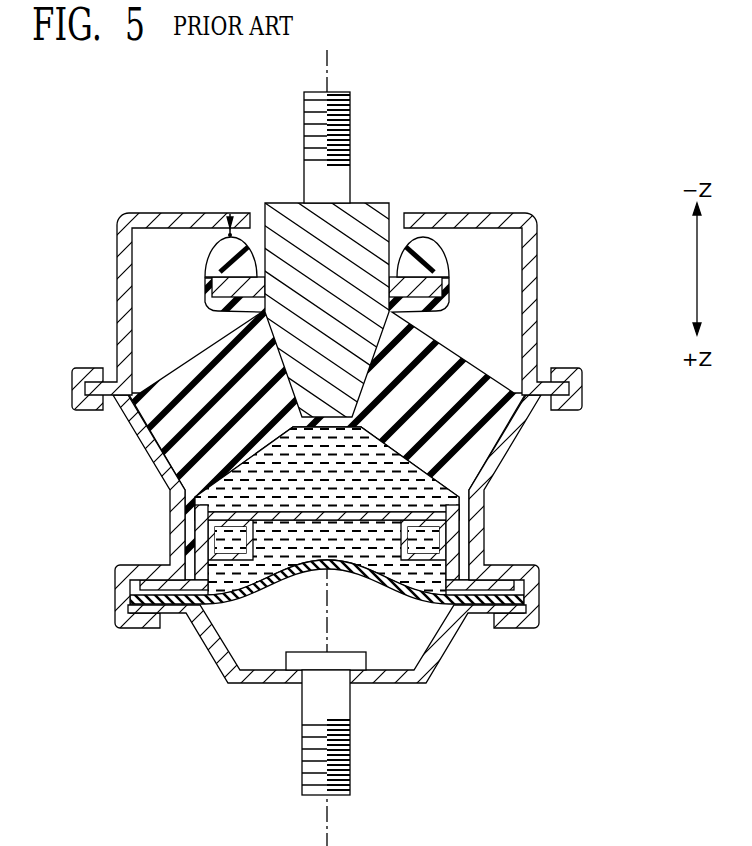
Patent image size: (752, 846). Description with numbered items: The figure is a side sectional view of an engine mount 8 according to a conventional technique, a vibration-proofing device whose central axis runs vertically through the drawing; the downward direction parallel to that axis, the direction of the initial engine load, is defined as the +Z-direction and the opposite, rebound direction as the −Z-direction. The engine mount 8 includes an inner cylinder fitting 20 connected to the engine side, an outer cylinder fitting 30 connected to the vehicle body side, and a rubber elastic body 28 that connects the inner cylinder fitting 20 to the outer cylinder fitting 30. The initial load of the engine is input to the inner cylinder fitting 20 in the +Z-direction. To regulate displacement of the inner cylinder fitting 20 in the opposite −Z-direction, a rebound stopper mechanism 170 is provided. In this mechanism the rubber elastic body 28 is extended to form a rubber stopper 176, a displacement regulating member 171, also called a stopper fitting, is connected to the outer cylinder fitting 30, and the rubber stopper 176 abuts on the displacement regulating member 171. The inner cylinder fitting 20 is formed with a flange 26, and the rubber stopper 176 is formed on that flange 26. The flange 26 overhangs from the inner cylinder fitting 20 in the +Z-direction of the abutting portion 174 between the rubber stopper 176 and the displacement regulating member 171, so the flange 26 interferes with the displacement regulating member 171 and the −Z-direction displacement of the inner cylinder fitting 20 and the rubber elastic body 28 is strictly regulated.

The engine mount 8 is at (327, 427).
The inner cylinder fitting 20 is at (377, 203).
The flange 26 is at (217, 303).
The rubber elastic body 28 is at (460, 377).
The outer cylinder fitting 30 is at (507, 448).
The rebound stopper mechanism 170 is at (300, 233).
The displacement regulating member 171 is at (183, 213).
The abutting portion 174 is at (231, 214).
The rubber stopper 176 is at (217, 263).